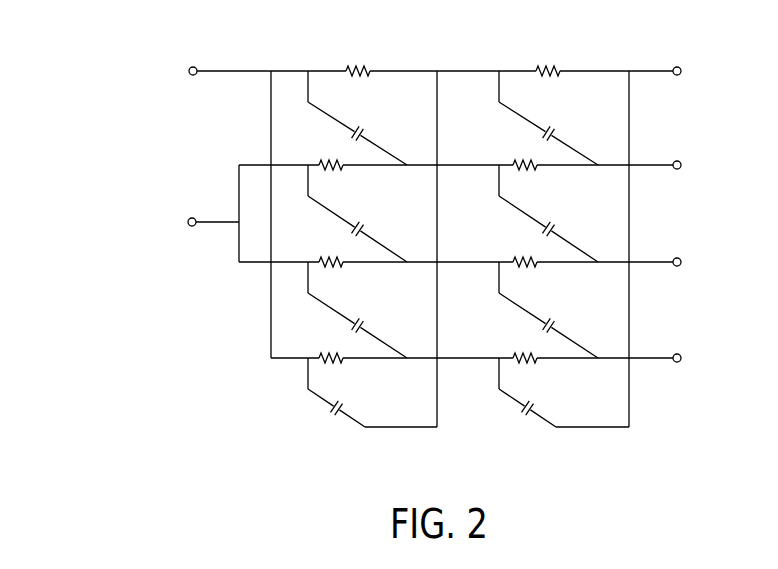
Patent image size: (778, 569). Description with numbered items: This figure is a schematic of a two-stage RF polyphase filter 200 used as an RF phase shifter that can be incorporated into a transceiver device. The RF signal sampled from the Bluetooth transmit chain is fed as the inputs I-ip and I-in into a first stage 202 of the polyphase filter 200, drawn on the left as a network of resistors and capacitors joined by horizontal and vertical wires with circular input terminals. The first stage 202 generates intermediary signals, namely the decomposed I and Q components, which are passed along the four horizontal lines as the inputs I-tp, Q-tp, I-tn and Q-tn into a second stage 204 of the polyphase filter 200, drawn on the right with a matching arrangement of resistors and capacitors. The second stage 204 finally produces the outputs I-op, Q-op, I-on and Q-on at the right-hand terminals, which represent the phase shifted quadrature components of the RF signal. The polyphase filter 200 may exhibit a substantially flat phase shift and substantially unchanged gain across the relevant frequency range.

The two-stage RF polyphase filter 200 is at (142, 253).
The first stage 202 is at (461, 438).
The second stage 204 is at (670, 438).